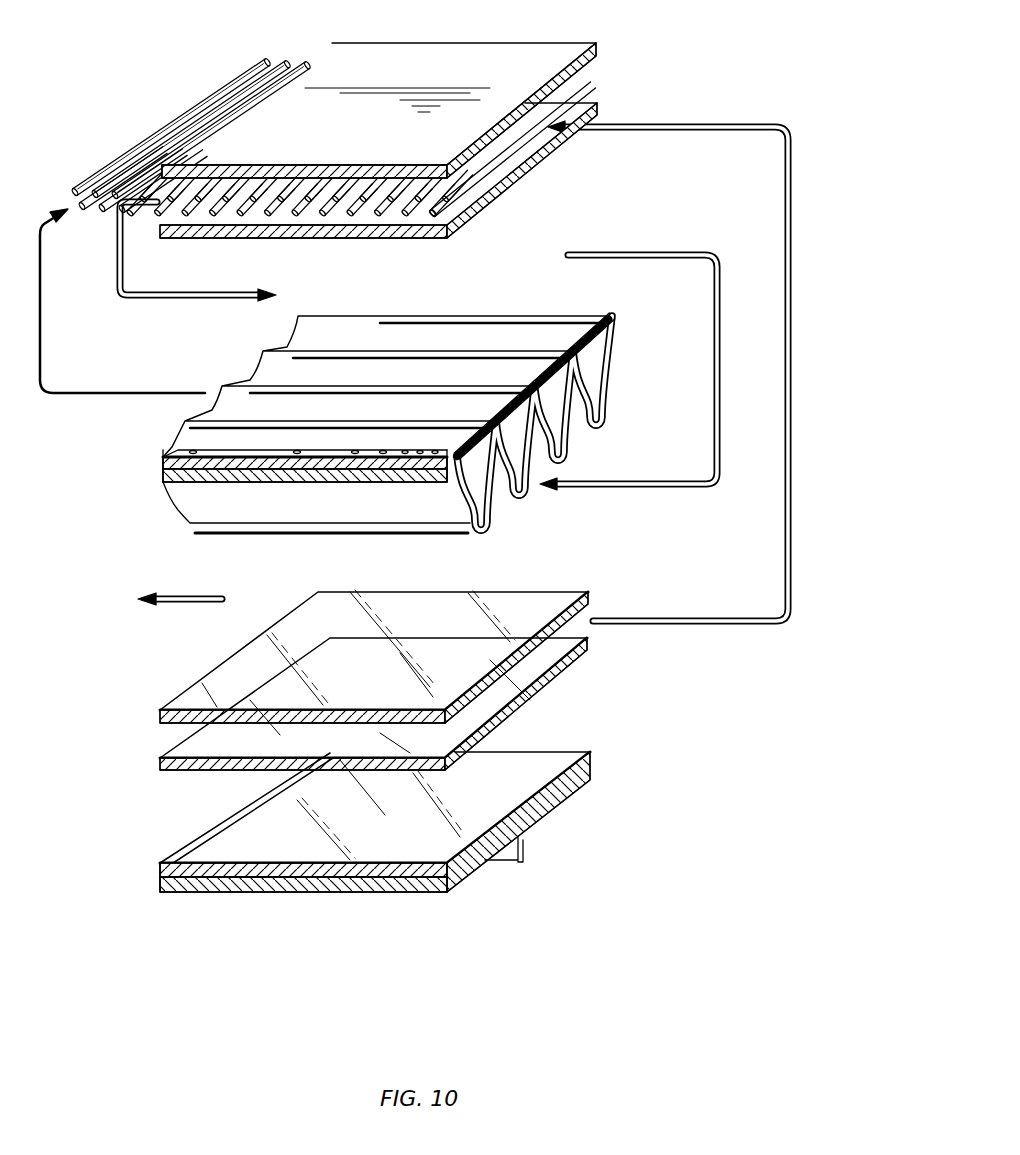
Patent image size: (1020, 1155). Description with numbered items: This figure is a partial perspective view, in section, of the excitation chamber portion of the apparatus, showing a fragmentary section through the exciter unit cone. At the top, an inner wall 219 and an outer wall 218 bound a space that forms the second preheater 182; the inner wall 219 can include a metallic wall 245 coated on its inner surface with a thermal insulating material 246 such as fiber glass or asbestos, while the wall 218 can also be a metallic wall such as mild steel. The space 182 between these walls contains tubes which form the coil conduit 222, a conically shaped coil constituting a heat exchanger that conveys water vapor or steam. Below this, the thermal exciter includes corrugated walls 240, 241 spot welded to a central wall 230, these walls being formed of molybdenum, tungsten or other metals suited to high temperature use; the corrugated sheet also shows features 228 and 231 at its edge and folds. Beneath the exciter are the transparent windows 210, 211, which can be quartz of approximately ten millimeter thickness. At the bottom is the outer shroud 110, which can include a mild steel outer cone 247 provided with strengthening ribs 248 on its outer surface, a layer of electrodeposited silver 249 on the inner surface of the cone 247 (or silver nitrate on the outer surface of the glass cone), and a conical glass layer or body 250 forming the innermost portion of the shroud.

The outer shroud 110 is at (166, 899).
The second preheater 182 is at (413, 218).
The transparent window 210 is at (543, 690).
The transparent window 211 is at (590, 593).
The wall 218 is at (428, 233).
The inner wall 219 is at (472, 55).
The coil conduit 222 is at (142, 152).
The corrugated sheet edge 228 is at (612, 334).
The central wall 230 is at (445, 482).
The corrugated sheet 231 is at (588, 370).
The corrugated wall 240 is at (450, 447).
The corrugated wall 241 is at (487, 527).
The metallic wall 245 is at (467, 190).
The thermal insulating material 246 is at (451, 160).
The outer cone 247 is at (453, 890).
The strengthening ribs 248 is at (523, 847).
The layer of electrodeposited silver 249 is at (432, 888).
The conical glass layer 250 is at (580, 747).